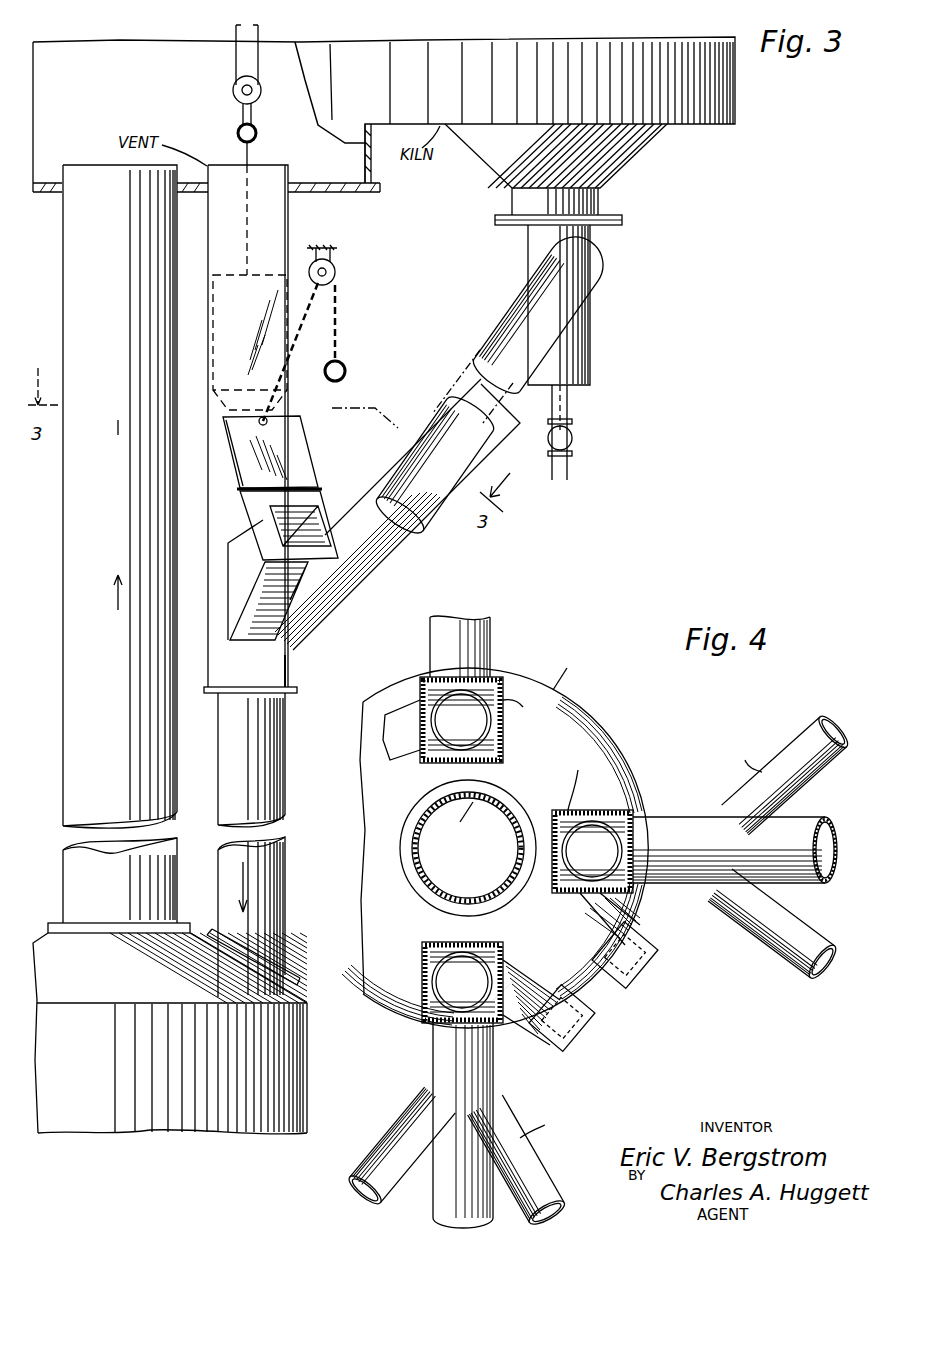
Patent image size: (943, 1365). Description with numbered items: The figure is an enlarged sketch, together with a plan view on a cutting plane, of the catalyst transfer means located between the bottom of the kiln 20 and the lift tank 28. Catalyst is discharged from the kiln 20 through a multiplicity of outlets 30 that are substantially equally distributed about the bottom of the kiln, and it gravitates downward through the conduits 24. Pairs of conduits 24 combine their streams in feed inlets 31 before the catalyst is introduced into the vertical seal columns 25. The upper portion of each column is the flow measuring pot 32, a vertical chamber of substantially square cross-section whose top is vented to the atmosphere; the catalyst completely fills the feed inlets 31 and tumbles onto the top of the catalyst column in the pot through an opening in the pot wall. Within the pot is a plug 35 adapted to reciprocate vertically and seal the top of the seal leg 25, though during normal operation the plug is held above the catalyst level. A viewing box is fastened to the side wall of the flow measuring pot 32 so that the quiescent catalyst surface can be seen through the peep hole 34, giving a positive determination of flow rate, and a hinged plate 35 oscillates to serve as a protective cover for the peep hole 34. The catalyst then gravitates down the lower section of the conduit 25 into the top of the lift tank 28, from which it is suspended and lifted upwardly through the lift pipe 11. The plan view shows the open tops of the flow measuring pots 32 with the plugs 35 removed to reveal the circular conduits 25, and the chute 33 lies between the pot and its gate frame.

In FIG. 3, the lift pipe 11 is at (163, 762).
In FIG. 4, the lift pipe 11 is at (463, 888).
In FIG. 3, the kiln 20 is at (725, 106).
In FIG. 3, the conduits 24 is at (558, 293).
In FIG. 4, the conduits 24 is at (810, 790).
In FIG. 3, the vertical seal columns 25 is at (278, 730).
In FIG. 4, the vertical seal columns 25 is at (590, 825).
In FIG. 3, the lift tank 28 is at (228, 1128).
In FIG. 4, the lift tank 28 is at (388, 1025).
In FIG. 3, the outlets 30 is at (578, 238).
In FIG. 3, the feed inlets 31 is at (340, 612).
In FIG. 4, the feed inlets 31 is at (815, 882).
In FIG. 3, the flow measuring pot 32 is at (283, 673).
In FIG. 4, the flow measuring pot 32 is at (497, 940).
In FIG. 3, the chute 33 is at (241, 598).
In FIG. 4, the chute 33 is at (420, 750).
In FIG. 3, the peep hole 34 is at (303, 527).
In FIG. 3, the plate 35 is at (301, 452).
In FIG. 4, the plate 35 is at (565, 1055).